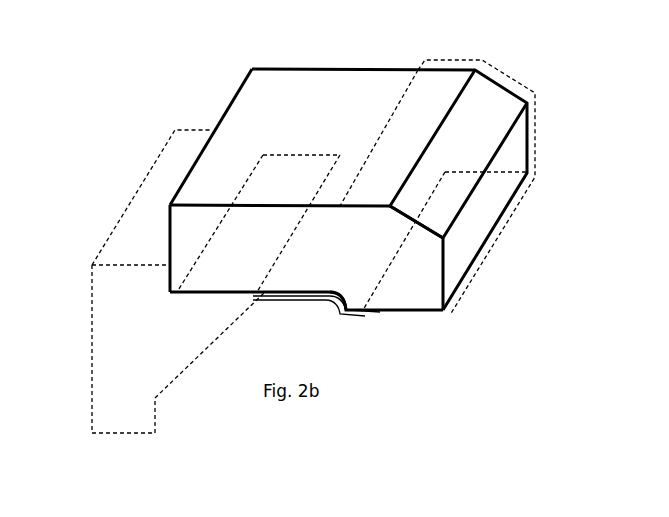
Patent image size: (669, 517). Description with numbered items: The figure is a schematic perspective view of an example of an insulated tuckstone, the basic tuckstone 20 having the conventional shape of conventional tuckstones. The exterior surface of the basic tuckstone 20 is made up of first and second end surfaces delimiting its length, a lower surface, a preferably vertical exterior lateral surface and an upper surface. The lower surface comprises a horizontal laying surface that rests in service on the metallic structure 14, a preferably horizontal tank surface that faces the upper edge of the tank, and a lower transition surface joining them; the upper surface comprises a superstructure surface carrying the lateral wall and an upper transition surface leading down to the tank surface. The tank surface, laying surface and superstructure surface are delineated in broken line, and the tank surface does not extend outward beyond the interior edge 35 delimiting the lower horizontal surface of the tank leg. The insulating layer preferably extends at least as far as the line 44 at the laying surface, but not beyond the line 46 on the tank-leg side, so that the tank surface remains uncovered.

The basic tuckstone 20 is at (182, 145).
The line 44 is at (340, 183).
The line 46 is at (384, 277).
The interior edge 35 is at (337, 314).
The metallic structure 14 is at (123, 420).